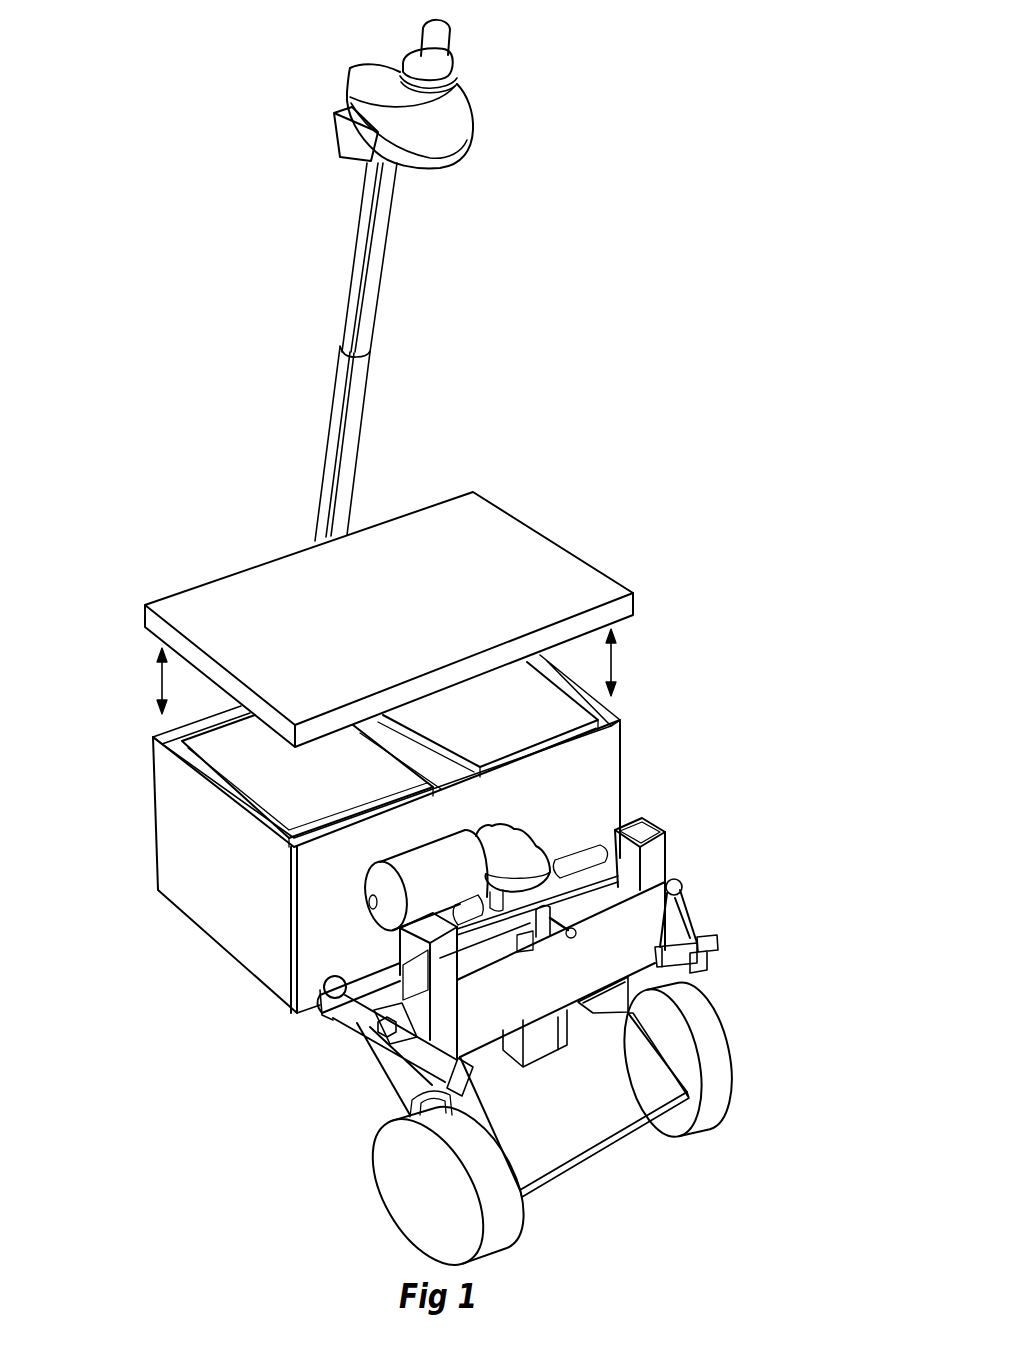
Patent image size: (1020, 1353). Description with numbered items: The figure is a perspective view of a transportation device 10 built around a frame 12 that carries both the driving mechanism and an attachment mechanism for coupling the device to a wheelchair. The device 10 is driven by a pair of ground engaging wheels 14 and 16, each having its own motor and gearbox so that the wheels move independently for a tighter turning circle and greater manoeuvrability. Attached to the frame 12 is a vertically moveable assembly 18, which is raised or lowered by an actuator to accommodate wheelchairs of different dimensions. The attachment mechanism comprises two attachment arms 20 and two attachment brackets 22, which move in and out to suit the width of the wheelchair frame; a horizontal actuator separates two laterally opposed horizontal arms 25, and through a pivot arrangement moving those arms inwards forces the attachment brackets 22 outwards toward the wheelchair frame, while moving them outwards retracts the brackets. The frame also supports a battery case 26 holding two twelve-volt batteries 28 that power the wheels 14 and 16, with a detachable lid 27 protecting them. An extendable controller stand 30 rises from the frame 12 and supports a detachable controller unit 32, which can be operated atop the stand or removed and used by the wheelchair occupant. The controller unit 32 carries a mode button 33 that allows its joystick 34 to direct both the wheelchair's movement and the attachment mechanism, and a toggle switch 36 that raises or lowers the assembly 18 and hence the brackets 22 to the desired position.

The transportation device 10 is at (661, 441).
The frame 12 is at (608, 1119).
The ground engaging wheel 14 is at (402, 1185).
The ground engaging wheel 16 is at (703, 1035).
The vertically moveable assembly 18 is at (538, 1011).
The attachment arm 20 is at (376, 1063).
The attachment bracket 22 is at (402, 1100).
The horizontal arm 25 is at (362, 985).
The battery case 26 is at (176, 862).
The detachable lid 27 is at (197, 606).
The battery 28 is at (322, 803).
The extendable controller stand 30 is at (325, 445).
The controller unit 32 is at (461, 131).
The mode button 33 is at (355, 67).
The joystick 34 is at (438, 40).
The toggle switch 36 is at (342, 133).